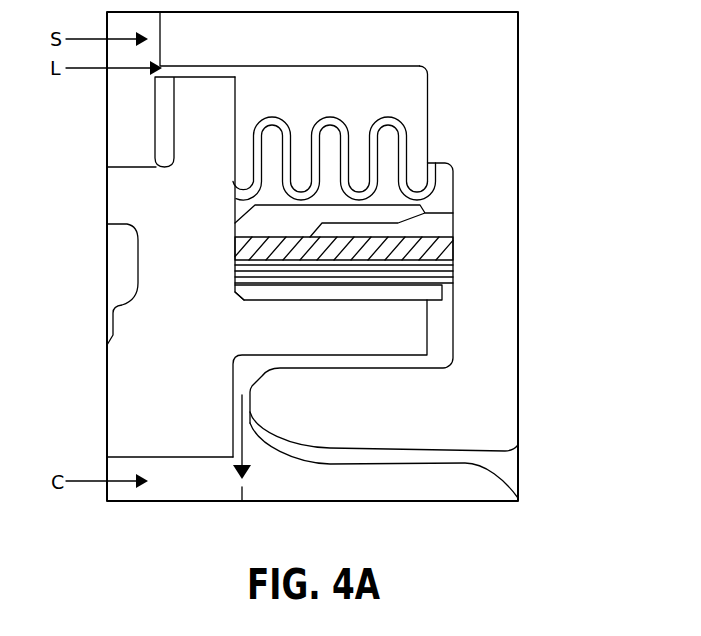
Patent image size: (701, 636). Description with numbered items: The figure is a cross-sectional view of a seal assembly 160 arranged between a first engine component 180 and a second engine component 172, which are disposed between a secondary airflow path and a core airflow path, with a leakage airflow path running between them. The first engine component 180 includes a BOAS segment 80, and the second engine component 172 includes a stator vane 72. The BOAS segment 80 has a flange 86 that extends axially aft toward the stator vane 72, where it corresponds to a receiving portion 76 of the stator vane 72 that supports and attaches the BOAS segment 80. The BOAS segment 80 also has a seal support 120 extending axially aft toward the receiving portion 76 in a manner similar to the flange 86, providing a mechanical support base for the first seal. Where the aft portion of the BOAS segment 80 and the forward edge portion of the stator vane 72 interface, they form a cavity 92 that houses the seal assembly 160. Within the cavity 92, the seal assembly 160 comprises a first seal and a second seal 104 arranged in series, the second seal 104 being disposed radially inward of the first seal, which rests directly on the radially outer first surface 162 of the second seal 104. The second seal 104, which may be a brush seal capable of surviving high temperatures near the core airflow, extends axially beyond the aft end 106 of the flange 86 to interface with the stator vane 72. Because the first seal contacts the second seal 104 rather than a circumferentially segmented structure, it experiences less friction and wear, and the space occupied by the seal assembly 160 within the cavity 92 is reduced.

The stator vane 72 is at (507, 412).
The receiving portion 76 is at (457, 318).
The BOAS segment 80 is at (123, 407).
The flange 86 is at (317, 343).
The cavity 92 is at (311, 95).
The second seal 104 is at (227, 303).
The aft end 106 is at (413, 323).
The seal support 120 is at (410, 118).
The seal assembly 160 is at (527, 70).
The first surface 162 is at (260, 200).
The second engine component 172 is at (500, 355).
The first engine component 180 is at (120, 378).